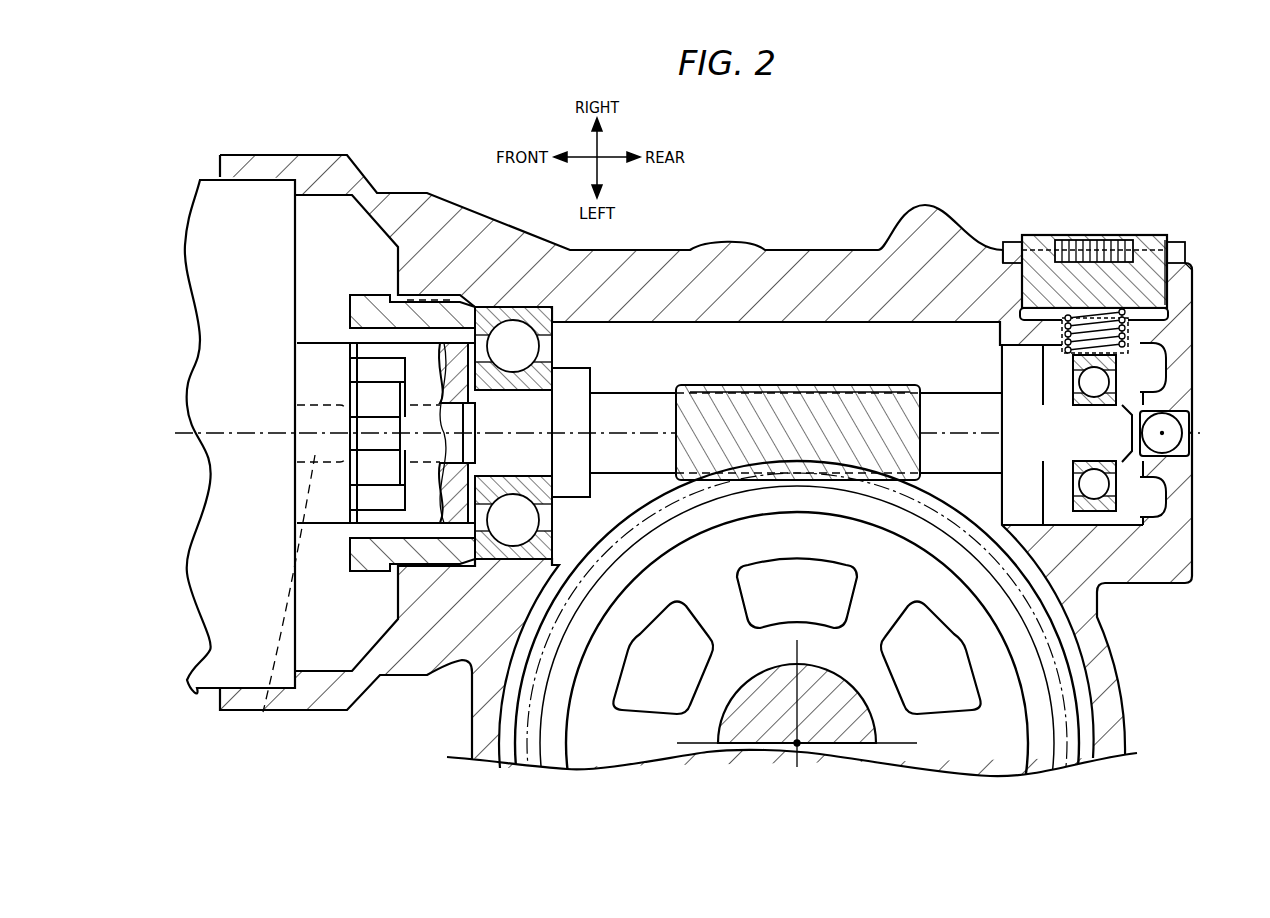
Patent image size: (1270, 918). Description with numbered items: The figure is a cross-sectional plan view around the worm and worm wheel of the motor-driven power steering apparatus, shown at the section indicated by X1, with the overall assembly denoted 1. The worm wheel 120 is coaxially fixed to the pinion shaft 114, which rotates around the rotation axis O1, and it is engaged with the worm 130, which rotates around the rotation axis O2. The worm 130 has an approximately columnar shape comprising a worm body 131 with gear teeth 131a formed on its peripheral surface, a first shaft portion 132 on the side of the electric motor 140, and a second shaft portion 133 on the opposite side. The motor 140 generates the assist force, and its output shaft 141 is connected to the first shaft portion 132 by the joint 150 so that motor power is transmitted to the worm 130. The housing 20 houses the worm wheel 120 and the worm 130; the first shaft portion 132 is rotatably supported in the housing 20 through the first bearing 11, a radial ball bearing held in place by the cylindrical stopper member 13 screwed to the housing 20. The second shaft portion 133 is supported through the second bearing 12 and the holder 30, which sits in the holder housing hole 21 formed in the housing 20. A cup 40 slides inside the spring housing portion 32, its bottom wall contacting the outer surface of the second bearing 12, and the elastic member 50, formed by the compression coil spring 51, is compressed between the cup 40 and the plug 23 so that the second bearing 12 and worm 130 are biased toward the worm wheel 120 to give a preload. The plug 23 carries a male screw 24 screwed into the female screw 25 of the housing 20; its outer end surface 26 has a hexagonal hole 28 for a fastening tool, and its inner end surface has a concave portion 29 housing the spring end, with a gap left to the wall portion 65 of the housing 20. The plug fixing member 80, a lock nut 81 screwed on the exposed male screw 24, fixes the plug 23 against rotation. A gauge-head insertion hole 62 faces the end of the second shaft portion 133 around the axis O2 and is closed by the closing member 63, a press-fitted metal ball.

The steering system / reduction gear 1 is at (1130, 183).
The first bearing 11 is at (518, 305).
The second bearing 12 is at (1118, 378).
The cylindrical stopper member 13 is at (362, 298).
The housing 20 is at (703, 241).
The holder housing hole 21 is at (1155, 505).
The plug 23 is at (1045, 235).
The male screw 24 is at (1178, 243).
The female screw 25 is at (1152, 298).
The outer end surface 26 is at (1012, 243).
The hexagonal hole 28 is at (1062, 243).
The concave portion 29 is at (1083, 250).
The holder 30 is at (1168, 409).
The spring housing portion 32 is at (1162, 355).
The cup 40 is at (1140, 312).
The elastic member 50 is at (1125, 300).
The compression coil spring 51 is at (1095, 335).
The gauge-head insertion hole 62 is at (1135, 440).
The closing member 63 is at (1165, 440).
The wall portion 65 is at (1140, 328).
The plug fixing member 80 is at (1007, 243).
The lock nut 81 is at (1188, 266).
The pinion shaft 114 is at (772, 722).
The worm wheel 120 is at (1078, 684).
The worm 130 is at (860, 384).
The worm body 131 is at (828, 415).
The gear teeth 131a is at (765, 415).
The first shaft portion 132 is at (465, 420).
The second shaft portion 133 is at (1160, 500).
The electric motor 140 is at (207, 180).
The output shaft 141 is at (263, 712).
The joint 150 is at (343, 528).
The rotation axis O1 is at (800, 746).
The rotation axis O2 is at (1185, 433).
The section line X1 is at (1132, 612).